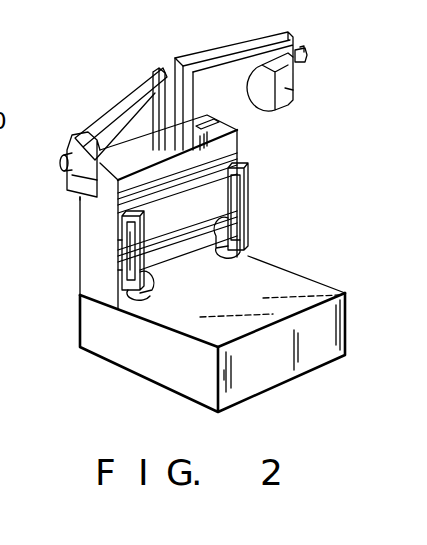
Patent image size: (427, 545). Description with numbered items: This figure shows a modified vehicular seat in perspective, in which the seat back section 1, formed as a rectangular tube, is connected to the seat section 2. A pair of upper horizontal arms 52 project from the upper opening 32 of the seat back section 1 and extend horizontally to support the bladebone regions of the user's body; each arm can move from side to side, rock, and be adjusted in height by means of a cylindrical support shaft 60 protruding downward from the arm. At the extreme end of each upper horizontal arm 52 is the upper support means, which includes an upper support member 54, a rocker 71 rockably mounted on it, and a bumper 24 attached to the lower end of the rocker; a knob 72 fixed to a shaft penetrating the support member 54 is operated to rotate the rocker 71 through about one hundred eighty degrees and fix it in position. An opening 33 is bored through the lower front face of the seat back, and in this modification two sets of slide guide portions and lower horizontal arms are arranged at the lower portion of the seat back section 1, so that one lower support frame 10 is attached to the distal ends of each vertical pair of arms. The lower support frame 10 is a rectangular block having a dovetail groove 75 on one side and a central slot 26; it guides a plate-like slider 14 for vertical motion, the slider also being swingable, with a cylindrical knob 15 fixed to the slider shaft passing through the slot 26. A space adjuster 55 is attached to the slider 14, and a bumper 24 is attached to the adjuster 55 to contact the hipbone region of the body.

The seat back section 1 is at (115, 200).
The seat section 2 is at (185, 327).
The lower support frame 10 is at (117, 212).
The slider 14 is at (153, 288).
The cylindrical knob 15 is at (115, 267).
The bumper 24 is at (115, 185).
The slot 26 is at (237, 180).
The upper opening 32 is at (205, 125).
The opening 33 is at (217, 177).
The upper horizontal arm 52 is at (128, 95).
The upper support member 54 is at (70, 143).
The space adjuster 55 is at (150, 272).
The cylindrical support shaft 60 is at (150, 123).
The rocker 71 is at (77, 183).
The knob 72 is at (302, 50).
The dovetail groove 75 is at (113, 248).